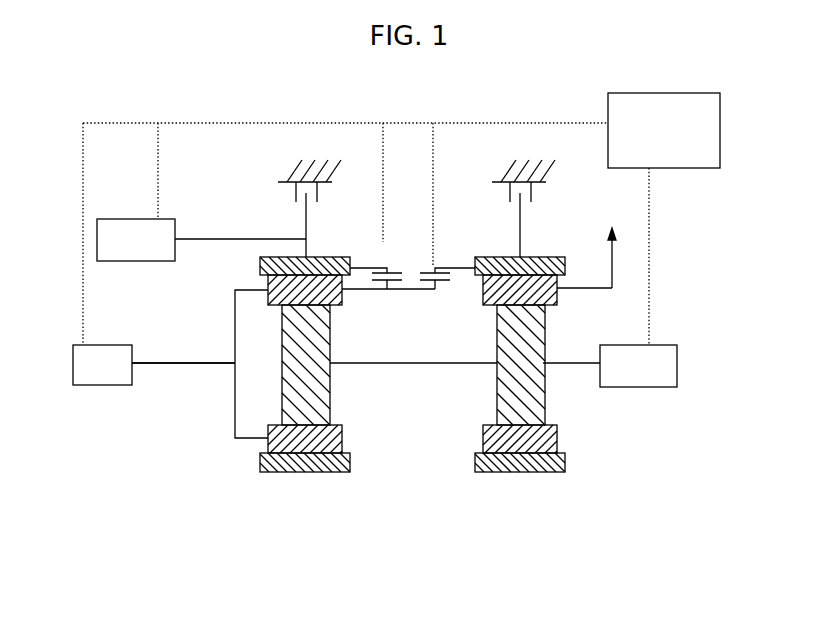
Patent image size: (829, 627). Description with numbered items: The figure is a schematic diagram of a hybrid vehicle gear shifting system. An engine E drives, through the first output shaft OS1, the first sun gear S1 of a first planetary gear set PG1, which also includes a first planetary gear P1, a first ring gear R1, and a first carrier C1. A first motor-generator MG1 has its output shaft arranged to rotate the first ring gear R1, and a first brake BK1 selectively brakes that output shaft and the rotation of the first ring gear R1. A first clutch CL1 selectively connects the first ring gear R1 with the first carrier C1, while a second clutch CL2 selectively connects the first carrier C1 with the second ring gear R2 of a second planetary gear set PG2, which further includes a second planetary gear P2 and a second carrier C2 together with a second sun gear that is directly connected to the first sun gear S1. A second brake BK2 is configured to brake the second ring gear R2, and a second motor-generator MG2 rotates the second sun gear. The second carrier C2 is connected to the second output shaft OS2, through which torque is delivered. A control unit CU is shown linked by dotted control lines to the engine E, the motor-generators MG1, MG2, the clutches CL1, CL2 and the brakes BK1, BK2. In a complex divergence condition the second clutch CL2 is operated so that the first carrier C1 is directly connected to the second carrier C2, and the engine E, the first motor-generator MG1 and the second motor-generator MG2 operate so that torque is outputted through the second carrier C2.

The control unit CU is at (664, 130).
The first motor-generator MG1 is at (201, 240).
The second motor-generator MG2 is at (610, 366).
The engine E is at (154, 365).
The first brake BK1 is at (291, 205).
The second brake BK2 is at (501, 205).
The first clutch CL1 is at (388, 264).
The second clutch CL2 is at (447, 264).
The first carrier C1 is at (248, 288).
The second carrier C2 is at (578, 291).
The first output shaft OS1 is at (183, 360).
The second output shaft OS2 is at (610, 248).
The first planetary gear set PG1 is at (326, 393).
The second planetary gear set PG2 is at (521, 394).
The first ring gear R1 is at (326, 256).
The second ring gear R2 is at (503, 256).
The first planetary gear P1 is at (344, 302).
The second planetary gear P2 is at (483, 302).
The first sun gear S1 is at (331, 383).